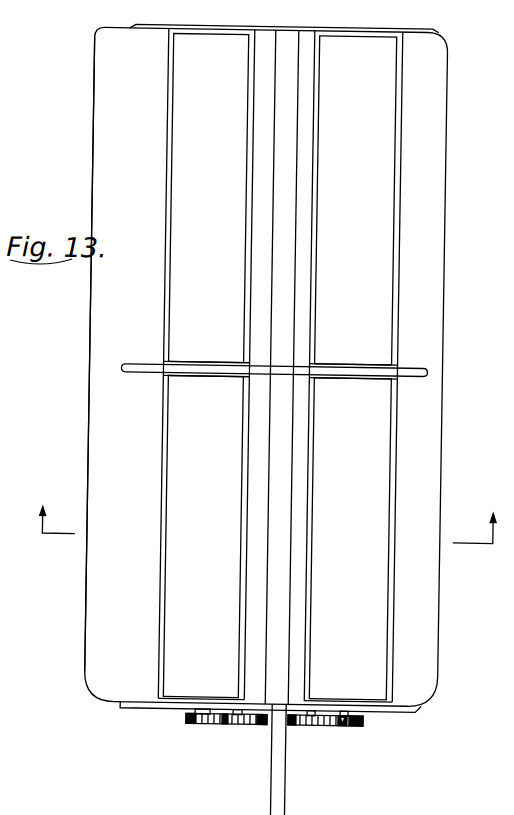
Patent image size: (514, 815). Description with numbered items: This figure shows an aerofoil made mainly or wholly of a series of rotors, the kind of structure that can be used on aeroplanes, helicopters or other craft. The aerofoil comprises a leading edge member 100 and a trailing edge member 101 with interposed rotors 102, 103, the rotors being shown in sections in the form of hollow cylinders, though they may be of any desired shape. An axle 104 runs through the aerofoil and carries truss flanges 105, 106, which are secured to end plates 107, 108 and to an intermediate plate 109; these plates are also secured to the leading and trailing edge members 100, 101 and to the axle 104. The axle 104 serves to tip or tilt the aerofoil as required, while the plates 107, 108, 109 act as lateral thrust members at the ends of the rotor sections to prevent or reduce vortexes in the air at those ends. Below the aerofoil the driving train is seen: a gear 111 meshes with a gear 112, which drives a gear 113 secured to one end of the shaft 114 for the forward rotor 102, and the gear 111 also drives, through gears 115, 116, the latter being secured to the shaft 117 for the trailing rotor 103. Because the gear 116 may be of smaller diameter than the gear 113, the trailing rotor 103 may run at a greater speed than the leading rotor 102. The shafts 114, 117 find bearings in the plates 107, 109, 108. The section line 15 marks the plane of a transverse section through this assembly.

The leading edge member 100 is at (428, 304).
The trailing edge member 101 is at (90, 356).
The rotor 102 is at (353, 368).
The trailing rotor 103 is at (206, 365).
The axle 104 is at (292, 761).
The truss flange 105 is at (259, 584).
The truss flange 106 is at (301, 591).
The end plate 107 is at (340, 706).
The end plate 108 is at (336, 33).
The intermediate plate 109 is at (329, 374).
The gear 111 is at (271, 727).
The gear 112 is at (323, 726).
The gear 113 is at (350, 724).
The shaft 114 is at (363, 726).
The gear 115 is at (238, 728).
The gear 116 is at (197, 729).
The shaft 117 is at (197, 721).
The section line 15- 15 is at (268, 514).